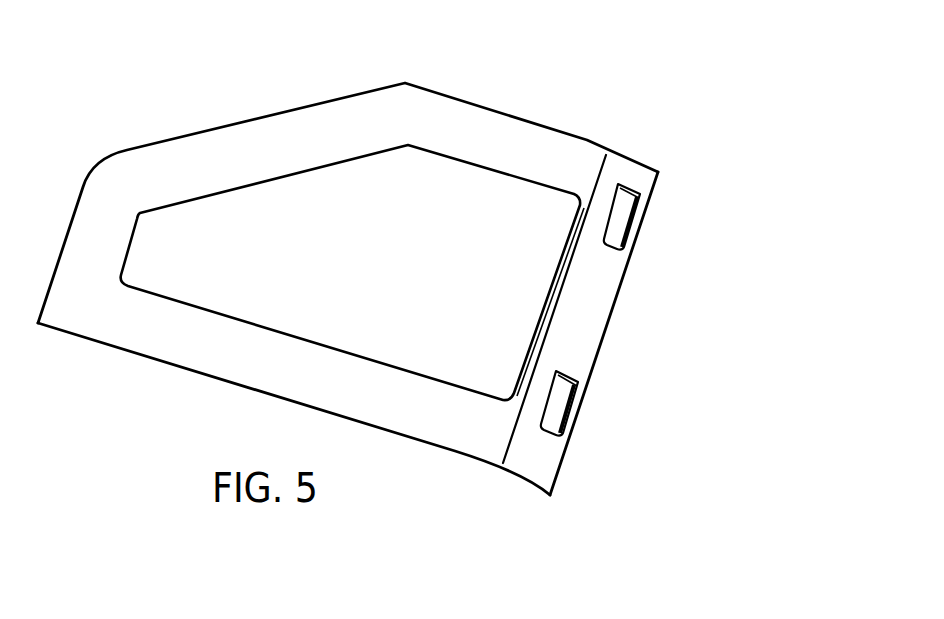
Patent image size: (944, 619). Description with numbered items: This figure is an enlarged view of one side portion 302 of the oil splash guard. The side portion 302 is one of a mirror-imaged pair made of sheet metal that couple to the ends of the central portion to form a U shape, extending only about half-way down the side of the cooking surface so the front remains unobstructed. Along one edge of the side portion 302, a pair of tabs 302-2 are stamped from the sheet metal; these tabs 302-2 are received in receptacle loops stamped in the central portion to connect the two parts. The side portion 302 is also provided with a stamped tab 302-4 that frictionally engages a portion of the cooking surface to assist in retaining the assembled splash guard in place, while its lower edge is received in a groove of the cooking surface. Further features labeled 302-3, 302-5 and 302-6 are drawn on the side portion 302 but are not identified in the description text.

The side portion 302 is at (528, 117).
The tab 302-2 is at (617, 233).
The flange edge 302-3 is at (638, 175).
The stamped tab 302-4 is at (455, 117).
The flange 302-5 is at (575, 155).
The tab slot strip 302-6 is at (635, 207).